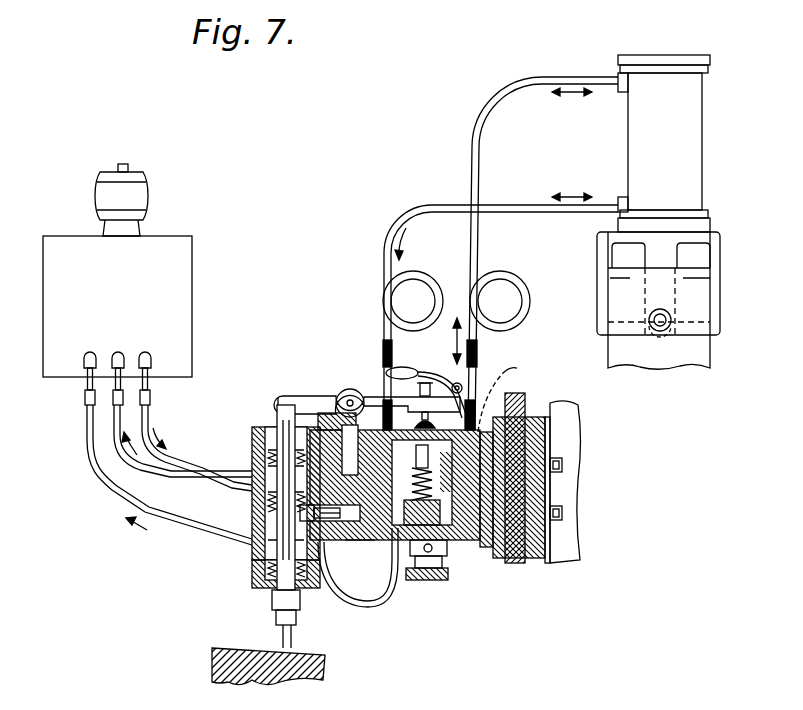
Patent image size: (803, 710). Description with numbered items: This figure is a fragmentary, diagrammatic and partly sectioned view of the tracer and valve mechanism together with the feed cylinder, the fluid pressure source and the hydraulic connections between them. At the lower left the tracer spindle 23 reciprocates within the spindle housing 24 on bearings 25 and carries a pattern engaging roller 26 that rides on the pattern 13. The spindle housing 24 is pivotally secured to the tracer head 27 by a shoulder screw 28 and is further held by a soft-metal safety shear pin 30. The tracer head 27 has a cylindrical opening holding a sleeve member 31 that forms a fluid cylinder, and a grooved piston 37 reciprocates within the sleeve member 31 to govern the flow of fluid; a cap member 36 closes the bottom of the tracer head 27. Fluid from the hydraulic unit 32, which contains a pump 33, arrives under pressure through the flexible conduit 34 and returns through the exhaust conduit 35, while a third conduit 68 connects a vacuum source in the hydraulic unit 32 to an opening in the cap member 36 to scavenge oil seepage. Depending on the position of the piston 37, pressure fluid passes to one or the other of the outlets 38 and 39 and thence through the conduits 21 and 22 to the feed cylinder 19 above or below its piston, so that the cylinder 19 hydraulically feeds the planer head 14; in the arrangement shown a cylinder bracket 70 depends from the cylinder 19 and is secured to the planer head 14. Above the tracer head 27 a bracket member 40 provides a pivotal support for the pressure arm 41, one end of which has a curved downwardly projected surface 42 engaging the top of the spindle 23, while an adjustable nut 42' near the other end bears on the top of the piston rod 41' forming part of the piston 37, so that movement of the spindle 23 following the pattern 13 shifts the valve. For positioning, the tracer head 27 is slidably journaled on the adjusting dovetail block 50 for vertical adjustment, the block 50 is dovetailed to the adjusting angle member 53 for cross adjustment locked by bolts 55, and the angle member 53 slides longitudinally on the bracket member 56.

The pattern 13 is at (307, 678).
The planer head 14 is at (700, 364).
The cylinder 19 is at (688, 128).
The conduit 21 is at (470, 138).
The conduit 22 is at (415, 212).
The spindle 23 is at (276, 420).
The spindle housing 24 is at (252, 580).
The bearings 25 is at (252, 562).
The pattern engaging roller 26 is at (293, 641).
The tracer head 27 is at (368, 545).
The shoulder screw 28 is at (340, 545).
The safety shear pin 30 is at (328, 412).
The sleeve member 31 is at (493, 560).
The hydraulic unit 32 is at (183, 277).
The pump 33 is at (140, 196).
The conduit 34 is at (173, 457).
The exhaust conduit 35 is at (113, 438).
The cap member 36 is at (465, 552).
The piston 37 is at (447, 552).
The outlet 38 is at (402, 398).
The outlet 39 is at (483, 400).
The bracket member 40 is at (350, 389).
The pressure arm 41 is at (367, 382).
The piston rod 41' is at (527, 376).
The curved downwardly projected surface 42 is at (261, 389).
The adjustable nut 42' is at (426, 378).
The adjusting dovetail block 50 is at (508, 562).
The adjusting angle member 53 is at (535, 566).
The bolts 55 is at (562, 463).
The bracket member 56 is at (572, 430).
The third conduit 68 is at (118, 494).
The cylinder bracket 70 is at (684, 212).